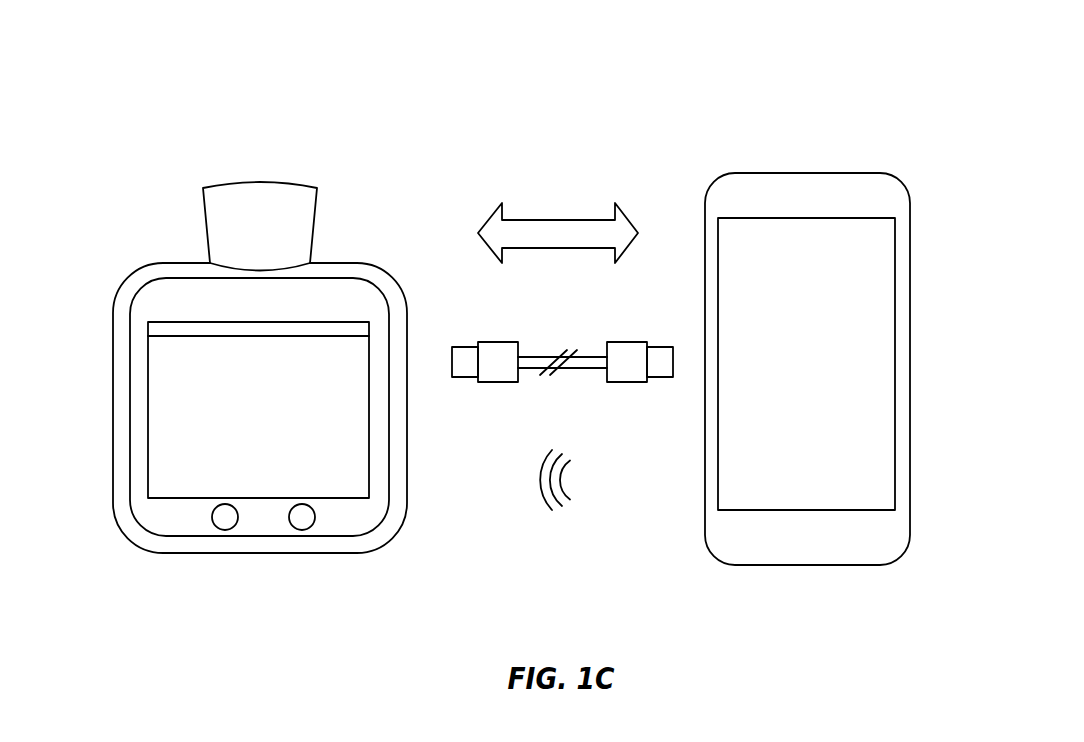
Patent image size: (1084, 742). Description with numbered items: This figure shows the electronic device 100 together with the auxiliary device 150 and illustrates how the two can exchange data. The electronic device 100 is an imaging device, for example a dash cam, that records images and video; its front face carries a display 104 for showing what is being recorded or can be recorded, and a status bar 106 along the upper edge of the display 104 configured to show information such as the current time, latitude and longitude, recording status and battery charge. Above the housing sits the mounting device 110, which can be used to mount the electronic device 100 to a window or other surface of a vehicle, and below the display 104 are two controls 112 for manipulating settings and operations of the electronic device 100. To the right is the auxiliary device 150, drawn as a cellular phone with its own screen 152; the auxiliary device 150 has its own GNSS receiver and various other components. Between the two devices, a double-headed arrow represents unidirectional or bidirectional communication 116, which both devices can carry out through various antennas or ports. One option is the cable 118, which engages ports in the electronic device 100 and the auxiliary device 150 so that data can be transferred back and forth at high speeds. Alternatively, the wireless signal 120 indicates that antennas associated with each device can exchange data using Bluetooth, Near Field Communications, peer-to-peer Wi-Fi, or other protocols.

The electronic device 100 is at (134, 125).
The display 104 is at (241, 458).
The status bar 106 is at (275, 336).
The mounting device 110 is at (241, 245).
The controls 112 is at (294, 529).
The communication 116 is at (541, 246).
The cable 118 is at (562, 350).
The wireless signal 120 is at (553, 461).
The auxiliary device 150 is at (683, 123).
The mobile device display 152 is at (736, 503).